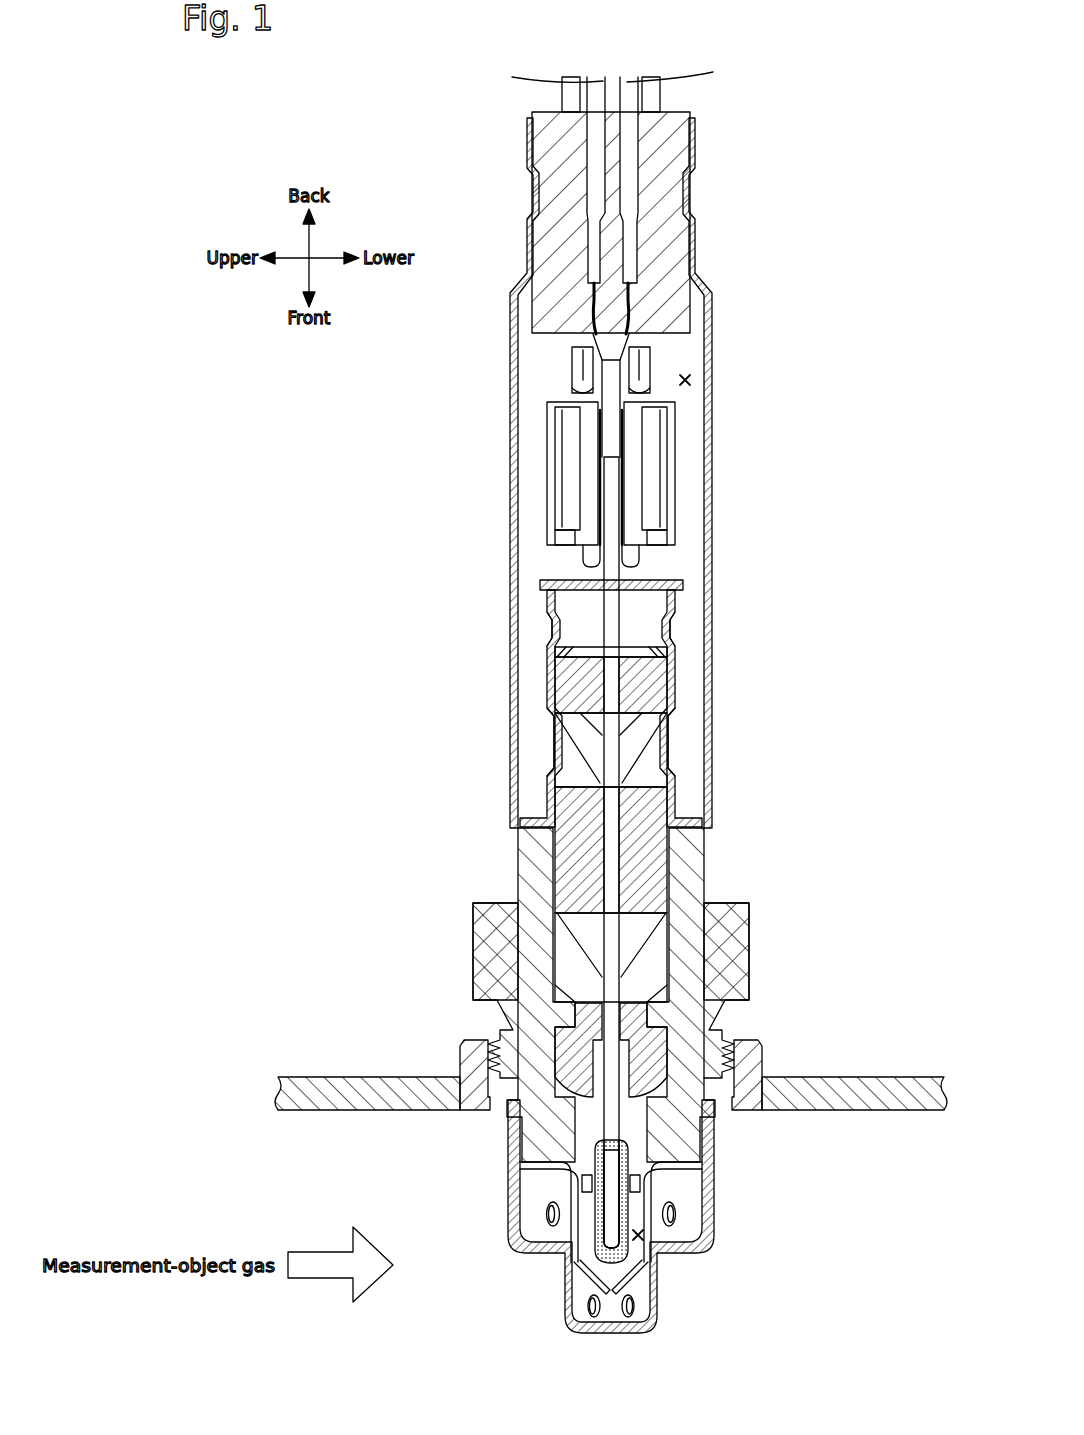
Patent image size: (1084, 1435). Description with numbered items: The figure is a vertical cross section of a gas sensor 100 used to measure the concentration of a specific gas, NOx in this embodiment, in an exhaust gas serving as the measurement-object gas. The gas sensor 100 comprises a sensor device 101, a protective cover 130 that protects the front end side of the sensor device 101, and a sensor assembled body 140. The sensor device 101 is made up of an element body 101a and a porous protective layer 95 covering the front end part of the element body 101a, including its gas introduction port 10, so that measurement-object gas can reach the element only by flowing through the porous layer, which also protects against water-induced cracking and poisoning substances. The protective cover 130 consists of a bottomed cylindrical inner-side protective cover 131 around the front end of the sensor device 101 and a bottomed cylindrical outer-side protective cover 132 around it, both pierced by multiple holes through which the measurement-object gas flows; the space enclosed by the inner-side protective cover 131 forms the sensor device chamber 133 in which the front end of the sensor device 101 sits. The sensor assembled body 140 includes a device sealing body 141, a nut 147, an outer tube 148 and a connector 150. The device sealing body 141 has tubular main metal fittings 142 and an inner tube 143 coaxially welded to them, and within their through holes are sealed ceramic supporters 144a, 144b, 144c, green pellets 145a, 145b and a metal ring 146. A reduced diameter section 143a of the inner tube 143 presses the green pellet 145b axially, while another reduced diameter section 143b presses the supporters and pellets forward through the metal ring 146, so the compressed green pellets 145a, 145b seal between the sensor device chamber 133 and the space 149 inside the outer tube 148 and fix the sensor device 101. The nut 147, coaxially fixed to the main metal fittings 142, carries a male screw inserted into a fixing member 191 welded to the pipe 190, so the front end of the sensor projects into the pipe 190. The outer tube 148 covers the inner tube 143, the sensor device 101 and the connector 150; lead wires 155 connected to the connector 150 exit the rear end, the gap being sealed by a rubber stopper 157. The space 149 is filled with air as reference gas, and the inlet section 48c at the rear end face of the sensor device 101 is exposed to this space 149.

The gas sensor 100 is at (836, 155).
The lead wires 155 is at (593, 158).
The rubber stopper 157 is at (662, 305).
The space 149 is at (689, 381).
The inlet section 48c is at (612, 455).
The connector 150 is at (711, 523).
The outer tube 148 is at (711, 568).
The inner tube 143 is at (673, 588).
The reduced diameter section 143a is at (553, 743).
The reduced diameter section 143b is at (553, 629).
The metal ring 146 is at (662, 650).
The ceramic supporter 144c is at (660, 688).
The green pellet 145b is at (653, 760).
The ceramic supporter 144b is at (653, 842).
The green pellet 145a is at (660, 927).
The ceramic supporter 144a is at (695, 998).
The device sealing body 141 is at (660, 838).
The main metal fittings 142 is at (690, 1020).
The nut 147 is at (684, 951).
The sensor assembled body 140 is at (695, 640).
The pipe 190 is at (356, 1093).
The fixing member 191 is at (468, 1062).
The protective cover 130 is at (699, 1216).
The inner-side protective cover 131 is at (655, 1197).
The outer-side protective cover 132 is at (714, 1213).
The sensor device chamber 133 is at (642, 1238).
The gas introduction port 10 is at (620, 1265).
The sensor device 101 is at (495, 1201).
The element body 101a is at (613, 1212).
The porous protective layer 95 is at (600, 1247).